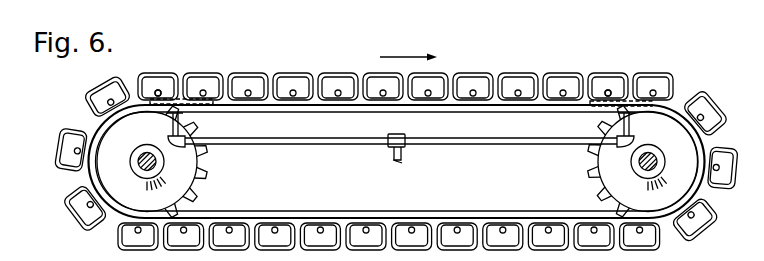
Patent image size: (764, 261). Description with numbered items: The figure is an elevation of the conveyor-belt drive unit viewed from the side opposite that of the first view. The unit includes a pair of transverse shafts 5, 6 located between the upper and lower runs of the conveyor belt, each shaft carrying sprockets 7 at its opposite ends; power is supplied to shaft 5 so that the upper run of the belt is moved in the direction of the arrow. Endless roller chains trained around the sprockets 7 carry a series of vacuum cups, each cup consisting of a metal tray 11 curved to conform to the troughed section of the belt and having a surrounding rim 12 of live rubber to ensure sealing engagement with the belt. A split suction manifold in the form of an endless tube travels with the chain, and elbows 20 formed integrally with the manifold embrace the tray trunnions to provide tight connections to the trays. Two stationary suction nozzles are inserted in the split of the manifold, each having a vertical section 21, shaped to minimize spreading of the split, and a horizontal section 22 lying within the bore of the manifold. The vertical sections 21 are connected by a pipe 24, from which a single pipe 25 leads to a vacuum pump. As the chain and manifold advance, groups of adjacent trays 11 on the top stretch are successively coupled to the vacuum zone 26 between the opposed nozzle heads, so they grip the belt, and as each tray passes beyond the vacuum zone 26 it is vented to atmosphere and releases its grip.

The transverse shaft 5 is at (631, 162).
The transverse shaft 6 is at (164, 162).
The sprocket 7 is at (208, 181).
The metal tray 11 is at (346, 90).
The surrounding rim 12 is at (395, 146).
The elbow 20 is at (158, 91).
The vertical section 21 is at (168, 128).
The horizontal section 22 is at (193, 99).
The pipe 24 is at (284, 146).
The single pipe 25 is at (406, 157).
The vacuum zone 26 is at (438, 109).